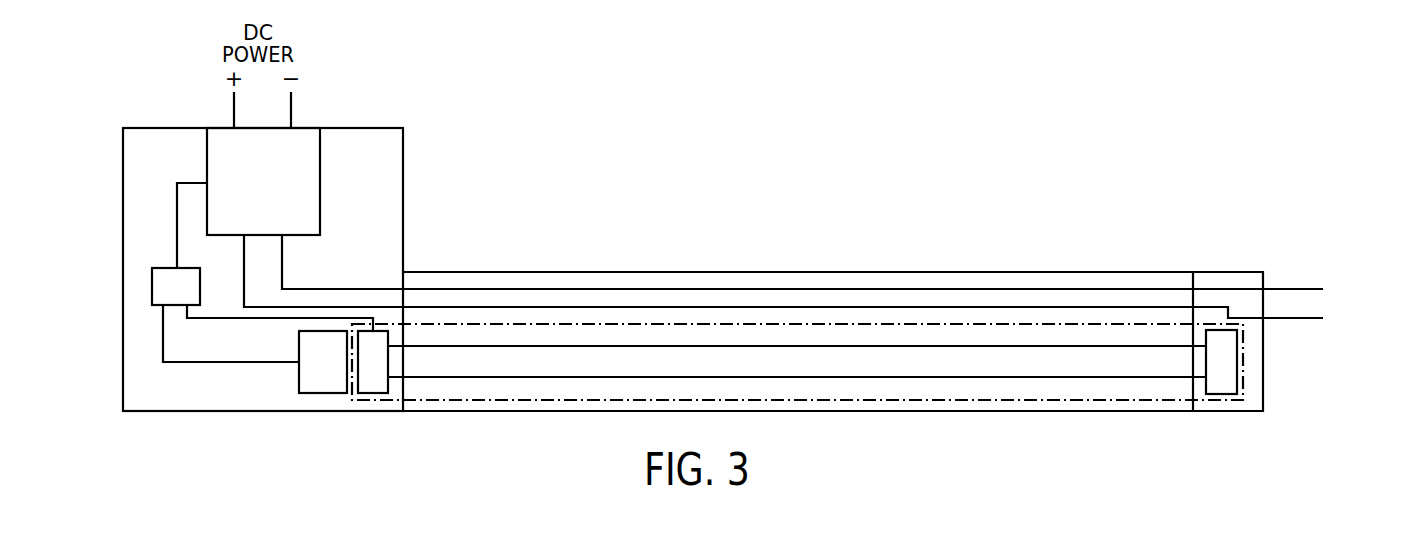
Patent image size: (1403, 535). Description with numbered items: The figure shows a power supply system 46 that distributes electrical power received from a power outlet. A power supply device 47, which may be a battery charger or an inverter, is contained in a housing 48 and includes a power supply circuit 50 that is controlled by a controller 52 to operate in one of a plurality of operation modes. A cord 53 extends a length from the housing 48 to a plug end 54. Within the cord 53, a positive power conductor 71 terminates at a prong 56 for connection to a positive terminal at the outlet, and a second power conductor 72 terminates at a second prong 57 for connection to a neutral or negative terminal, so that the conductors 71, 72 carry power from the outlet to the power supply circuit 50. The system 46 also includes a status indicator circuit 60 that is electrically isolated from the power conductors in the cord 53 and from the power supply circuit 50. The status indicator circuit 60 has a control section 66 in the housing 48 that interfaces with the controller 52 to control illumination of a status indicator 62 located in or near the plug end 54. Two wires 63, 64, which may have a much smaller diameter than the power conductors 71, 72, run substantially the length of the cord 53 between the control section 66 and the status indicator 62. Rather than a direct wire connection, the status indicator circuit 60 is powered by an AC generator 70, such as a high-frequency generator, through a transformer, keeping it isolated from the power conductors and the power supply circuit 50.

The power supply system 46 is at (984, 138).
The power supply device 47 is at (352, 104).
The housing 48 is at (403, 197).
The power supply circuit 50 is at (320, 183).
The controller 52 is at (152, 285).
The cord 53 is at (465, 272).
The plug end 54 is at (1227, 272).
The prong 56 is at (1283, 289).
The second prong 57 is at (1283, 318).
The status indicator circuit 60 is at (797, 400).
The status indicator 62 is at (1237, 362).
The wire 63 is at (510, 346).
The wire 64 is at (668, 377).
The control section 66 is at (388, 362).
The AC generator 70 is at (299, 380).
The positive power conductor 71 is at (633, 289).
The second power conductor 72 is at (698, 307).